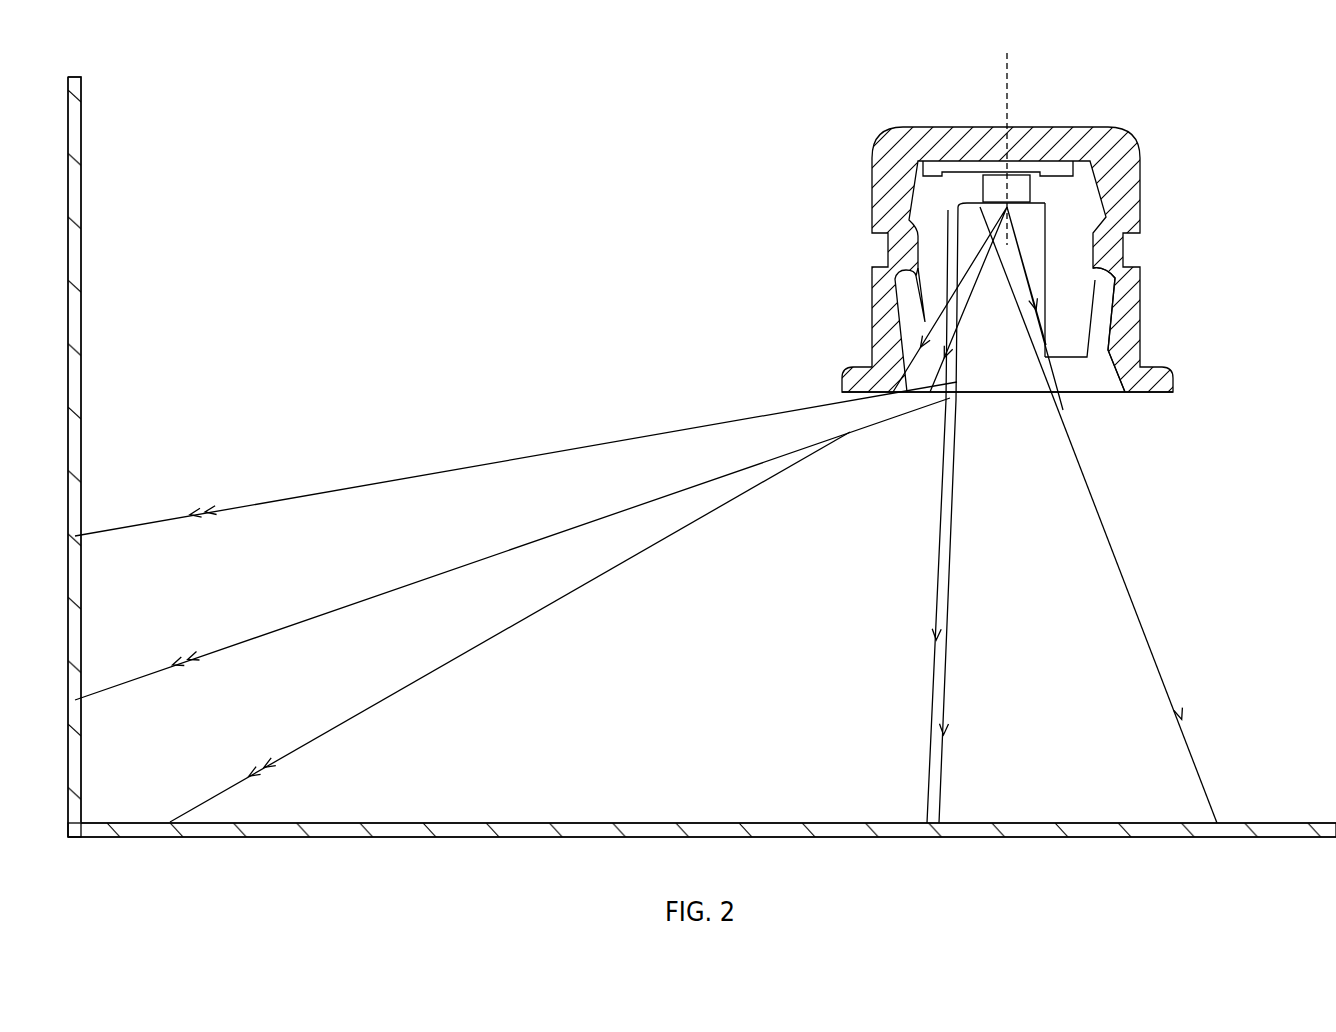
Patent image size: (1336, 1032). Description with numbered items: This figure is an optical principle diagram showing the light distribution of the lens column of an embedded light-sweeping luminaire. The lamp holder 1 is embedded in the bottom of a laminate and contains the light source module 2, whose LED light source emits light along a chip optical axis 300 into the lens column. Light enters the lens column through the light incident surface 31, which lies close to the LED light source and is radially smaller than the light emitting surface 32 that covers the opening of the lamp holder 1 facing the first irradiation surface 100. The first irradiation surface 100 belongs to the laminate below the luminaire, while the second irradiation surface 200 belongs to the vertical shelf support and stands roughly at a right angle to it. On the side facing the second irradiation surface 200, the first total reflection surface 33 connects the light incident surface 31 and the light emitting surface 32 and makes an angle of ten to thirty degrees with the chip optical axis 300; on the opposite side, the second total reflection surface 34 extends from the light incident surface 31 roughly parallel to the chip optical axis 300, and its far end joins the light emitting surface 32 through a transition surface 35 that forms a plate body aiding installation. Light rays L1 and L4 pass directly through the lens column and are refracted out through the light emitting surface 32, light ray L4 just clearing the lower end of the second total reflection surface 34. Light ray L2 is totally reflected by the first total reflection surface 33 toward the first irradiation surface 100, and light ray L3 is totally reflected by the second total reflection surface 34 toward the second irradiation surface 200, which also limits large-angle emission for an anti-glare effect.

The lamp holder 1 is at (1125, 165).
The light source module 2 is at (991, 170).
The light incident surface 31 is at (1043, 194).
The light emitting surface 32 is at (1082, 397).
The first total reflection surface 33 is at (937, 272).
The second total reflection surface 34 is at (1049, 286).
The transition surface 35 is at (1074, 350).
The first irradiation surface 100 is at (504, 820).
The second irradiation surface 200 is at (84, 217).
The chip optical axis 300 is at (1011, 76).
The light ray L1 is at (510, 627).
The light ray L2 is at (966, 611).
The light ray L3 is at (516, 541).
The light ray L4 is at (1098, 515).